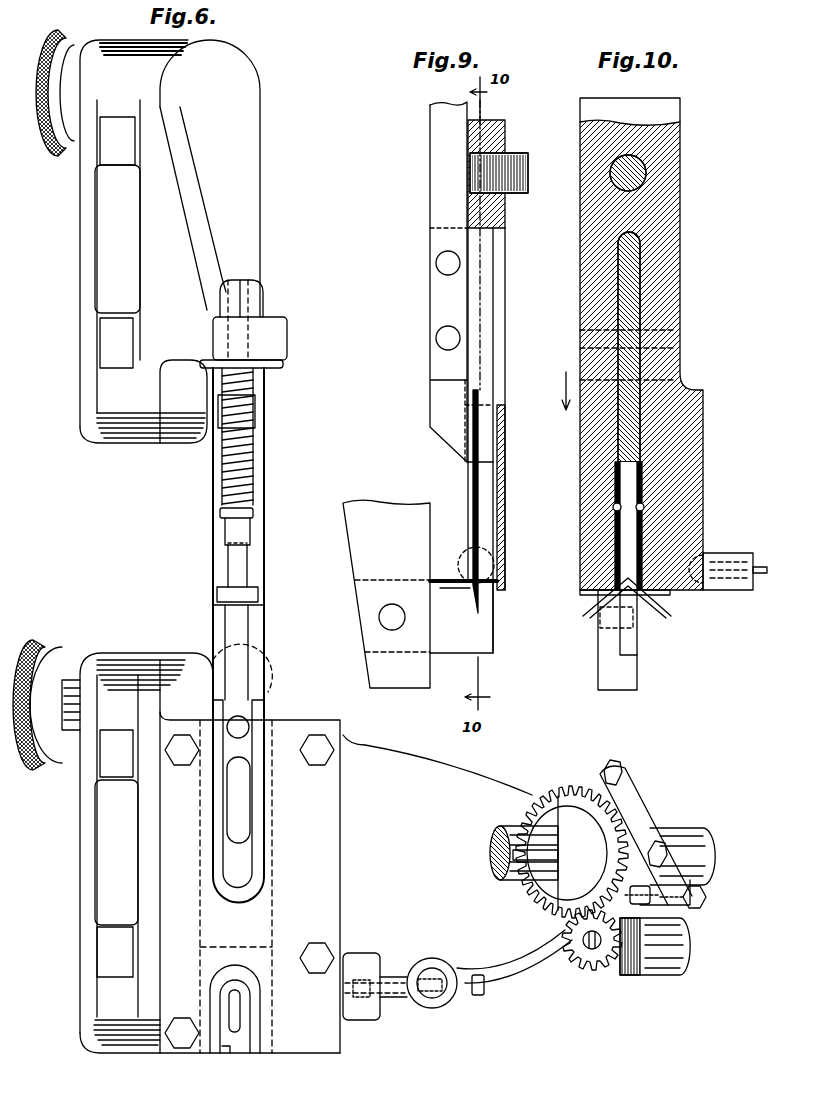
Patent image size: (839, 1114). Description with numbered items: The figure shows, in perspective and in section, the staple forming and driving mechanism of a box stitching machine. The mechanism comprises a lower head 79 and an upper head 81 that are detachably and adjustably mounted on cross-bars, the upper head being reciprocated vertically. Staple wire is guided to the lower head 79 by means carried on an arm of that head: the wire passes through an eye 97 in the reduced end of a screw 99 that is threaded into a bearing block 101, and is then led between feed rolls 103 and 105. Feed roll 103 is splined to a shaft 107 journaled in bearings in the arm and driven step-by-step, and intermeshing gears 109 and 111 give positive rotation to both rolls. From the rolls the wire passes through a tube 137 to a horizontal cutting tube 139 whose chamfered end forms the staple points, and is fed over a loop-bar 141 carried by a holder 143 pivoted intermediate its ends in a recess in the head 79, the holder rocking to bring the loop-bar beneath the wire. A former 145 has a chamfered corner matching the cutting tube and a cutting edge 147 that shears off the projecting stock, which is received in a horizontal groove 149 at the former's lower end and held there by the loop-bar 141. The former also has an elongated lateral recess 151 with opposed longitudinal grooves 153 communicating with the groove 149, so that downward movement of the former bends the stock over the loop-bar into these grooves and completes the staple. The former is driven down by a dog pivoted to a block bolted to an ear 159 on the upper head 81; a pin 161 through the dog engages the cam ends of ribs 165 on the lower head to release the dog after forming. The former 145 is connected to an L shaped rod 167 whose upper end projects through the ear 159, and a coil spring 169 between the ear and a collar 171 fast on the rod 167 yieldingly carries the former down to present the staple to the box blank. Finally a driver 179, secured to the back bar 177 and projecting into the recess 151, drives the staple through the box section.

In FIG. 6, the lower head 79 is at (200, 656).
In FIG. 6, the upper head 81 is at (247, 180).
In FIG. 6, the eye 97 is at (640, 886).
In FIG. 6, the screw 99 is at (707, 899).
In FIG. 6, the bearing block 101 is at (632, 806).
In FIG. 6, the feed roll 103 is at (640, 828).
In FIG. 6, the feed roll 105 is at (618, 978).
In FIG. 6, the shaft 107 is at (496, 838).
In FIG. 6, the gear 109 is at (564, 793).
In FIG. 6, the gear 111 is at (590, 975).
In FIG. 6, the tube 137 is at (503, 975).
In FIG. 6, the cutting tube 139 is at (345, 1008).
In FIG. 6, the loop-bar 141 is at (240, 985).
In FIG. 9, the loop-bar 141 is at (490, 633).
In FIG. 10, the loop-bar 141 is at (640, 605).
In FIG. 6, the holder 143 is at (230, 1040).
In FIG. 9, the holder 143 is at (417, 668).
In FIG. 10, the holder 143 is at (632, 668).
In FIG. 9, the former 145 is at (507, 226).
In FIG. 10, the former 145 is at (585, 480).
In FIG. 10, the cutting edge 147 is at (700, 590).
In FIG. 10, the horizontal groove 149 is at (585, 596).
In FIG. 9, the lateral recess 151 is at (467, 475).
In FIG. 10, the lateral recess 151 is at (628, 480).
In FIG. 9, the longitudinal grooves 153 is at (473, 507).
In FIG. 10, the longitudinal grooves 153 is at (614, 508).
In FIG. 6, the ear 159 is at (278, 336).
In FIG. 6, the pin 161 is at (260, 597).
In FIG. 6, the ribs 165 is at (255, 812).
In FIG. 6, the L shaped rod 167 is at (252, 633).
In FIG. 9, the L shaped rod 167 is at (522, 162).
In FIG. 10, the L shaped rod 167 is at (650, 176).
In FIG. 6, the coil spring 169 is at (256, 446).
In FIG. 6, the collar 171 is at (253, 514).
In FIG. 9, the back bar 177 is at (438, 179).
In FIG. 9, the driver 179 is at (487, 424).